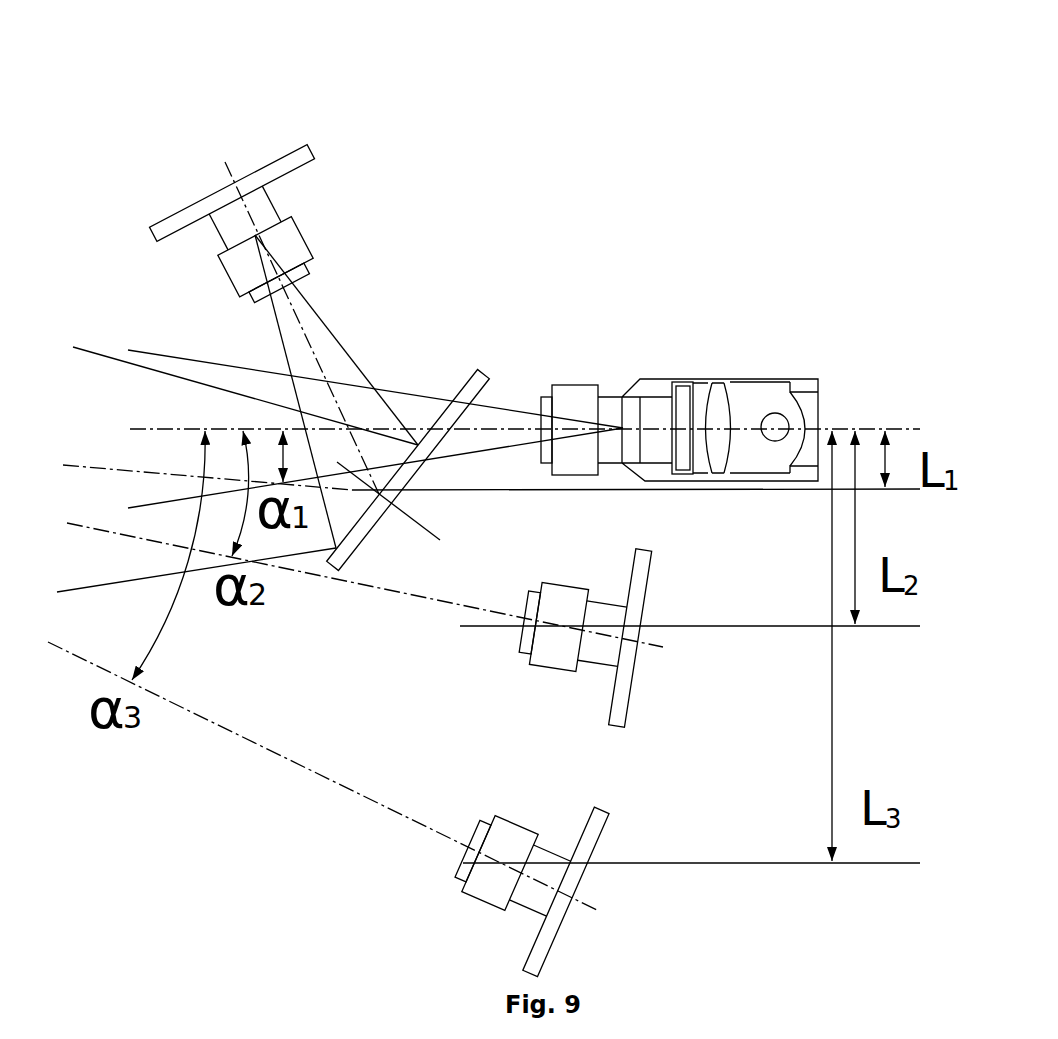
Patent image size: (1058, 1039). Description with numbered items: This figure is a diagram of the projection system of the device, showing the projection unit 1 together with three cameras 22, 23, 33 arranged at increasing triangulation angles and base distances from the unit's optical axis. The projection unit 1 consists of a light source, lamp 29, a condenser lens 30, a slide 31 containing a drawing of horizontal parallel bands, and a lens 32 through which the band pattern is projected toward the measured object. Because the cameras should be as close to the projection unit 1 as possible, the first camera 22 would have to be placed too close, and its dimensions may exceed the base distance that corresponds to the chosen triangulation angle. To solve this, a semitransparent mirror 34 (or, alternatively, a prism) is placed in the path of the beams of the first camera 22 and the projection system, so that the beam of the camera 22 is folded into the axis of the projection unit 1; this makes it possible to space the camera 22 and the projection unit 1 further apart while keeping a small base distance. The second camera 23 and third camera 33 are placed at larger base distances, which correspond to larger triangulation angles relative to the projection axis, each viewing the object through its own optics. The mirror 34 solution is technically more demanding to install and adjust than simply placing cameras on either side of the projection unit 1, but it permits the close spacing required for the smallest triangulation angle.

The projection system 1 is at (640, 377).
The first camera 22 is at (168, 210).
The second camera 23 is at (565, 672).
The lamp 29 is at (781, 404).
The condenser lens 30 is at (724, 381).
The slide 31 is at (688, 381).
The lens 32 is at (578, 382).
The third camera 33 is at (483, 910).
The semitransparent mirror 34 is at (462, 376).